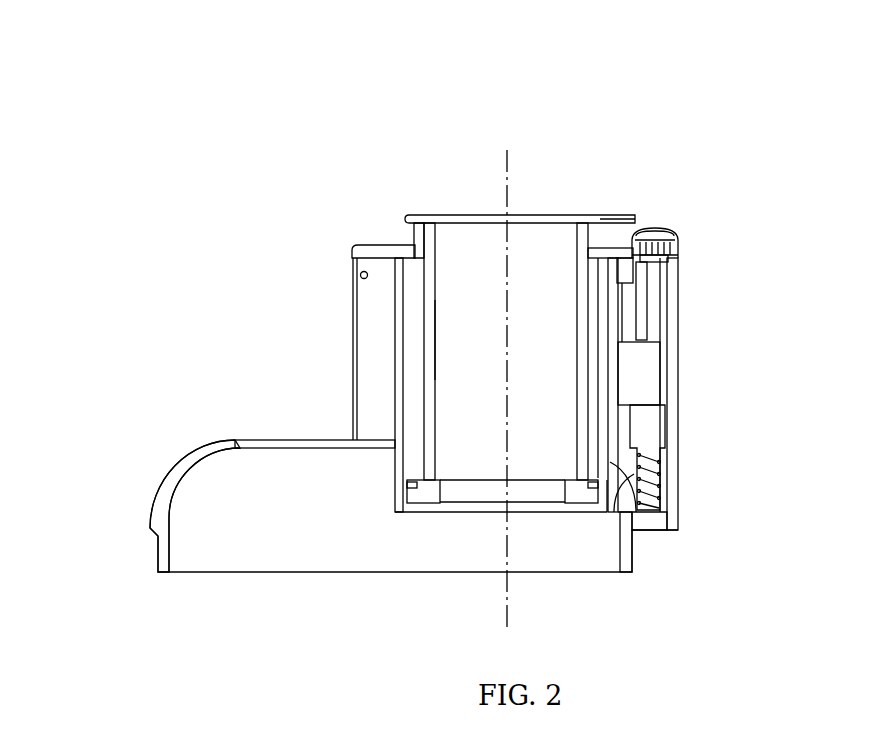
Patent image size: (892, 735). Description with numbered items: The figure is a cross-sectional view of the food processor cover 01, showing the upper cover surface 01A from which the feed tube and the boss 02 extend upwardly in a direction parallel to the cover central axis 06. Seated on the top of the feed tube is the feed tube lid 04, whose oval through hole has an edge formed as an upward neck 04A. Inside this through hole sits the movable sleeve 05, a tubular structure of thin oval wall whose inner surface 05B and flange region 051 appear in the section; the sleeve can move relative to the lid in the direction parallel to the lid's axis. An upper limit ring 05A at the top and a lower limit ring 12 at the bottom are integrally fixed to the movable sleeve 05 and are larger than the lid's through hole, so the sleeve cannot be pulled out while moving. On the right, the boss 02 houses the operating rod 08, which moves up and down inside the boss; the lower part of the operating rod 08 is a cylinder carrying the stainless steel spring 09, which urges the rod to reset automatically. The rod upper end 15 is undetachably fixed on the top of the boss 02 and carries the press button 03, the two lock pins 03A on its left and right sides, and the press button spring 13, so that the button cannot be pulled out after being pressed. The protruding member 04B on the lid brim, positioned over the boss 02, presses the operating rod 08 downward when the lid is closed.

The food processor cover 01 is at (148, 455).
The upper cover surface 01A is at (270, 443).
The boss 02 is at (673, 363).
The press button 03 is at (657, 232).
The lock pins 03A is at (624, 247).
The feed tube lid 04 is at (352, 250).
The upward neck 04A is at (420, 240).
The protruding member 04B is at (627, 280).
The movable sleeve 05 is at (465, 400).
The upper limit ring 05A is at (630, 217).
The tube inner wall 05B is at (433, 338).
The flange 051 is at (505, 222).
The cover central axis 06 is at (507, 150).
The operating rod 08 is at (660, 428).
The stainless steel spring 09 is at (660, 484).
The lower limit ring 12 is at (423, 503).
The press button spring 13 is at (678, 243).
The rod upper end 15 is at (658, 257).